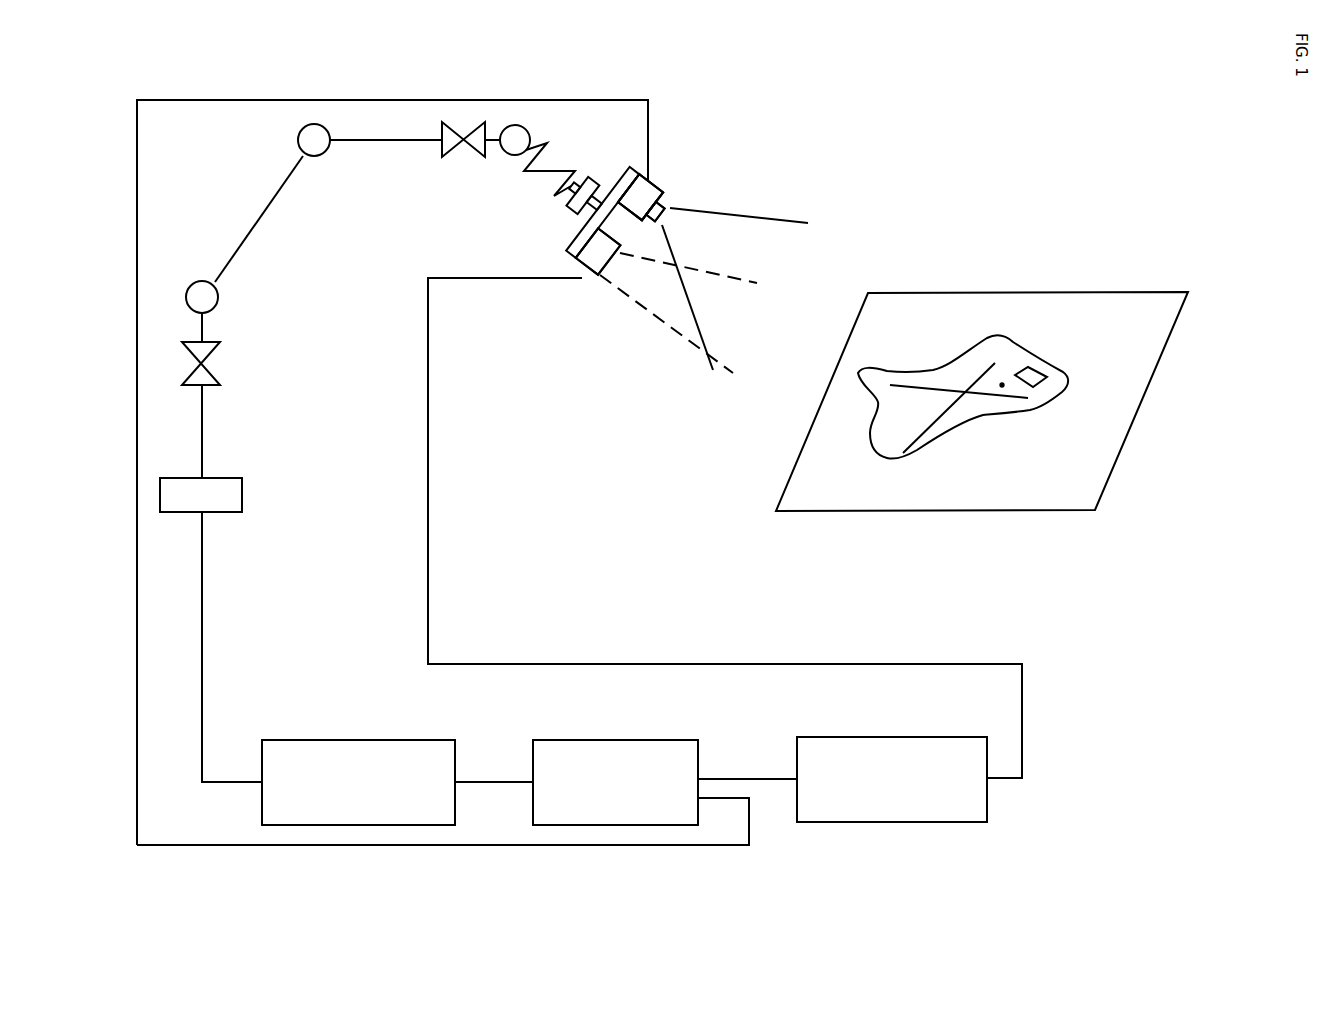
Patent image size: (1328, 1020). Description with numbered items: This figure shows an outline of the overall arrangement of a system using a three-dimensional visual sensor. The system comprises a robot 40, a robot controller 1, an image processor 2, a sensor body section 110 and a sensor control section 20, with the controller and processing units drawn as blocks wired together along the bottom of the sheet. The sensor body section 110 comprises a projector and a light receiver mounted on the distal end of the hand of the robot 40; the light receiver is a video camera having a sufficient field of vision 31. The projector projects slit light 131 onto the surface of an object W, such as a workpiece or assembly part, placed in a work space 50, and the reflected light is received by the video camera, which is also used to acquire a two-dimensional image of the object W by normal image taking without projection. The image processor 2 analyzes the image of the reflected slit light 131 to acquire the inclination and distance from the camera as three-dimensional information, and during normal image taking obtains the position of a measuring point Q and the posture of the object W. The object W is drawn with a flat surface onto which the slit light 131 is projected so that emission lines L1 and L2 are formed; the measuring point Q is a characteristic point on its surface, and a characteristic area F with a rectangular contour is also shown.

The robot controller 1 is at (355, 740).
The image processor 2 is at (633, 740).
The sensor control section 20 is at (903, 737).
The field of vision 31 is at (748, 213).
The robot 40 is at (221, 410).
The work space 50 is at (1137, 445).
The sensor body section 110 is at (566, 213).
The slit light 131 is at (713, 274).
The object W is at (1043, 357).
The characteristic area F is at (1042, 383).
The measuring point Q is at (1002, 387).
The emission line L1 is at (930, 433).
The emission line L2 is at (912, 387).